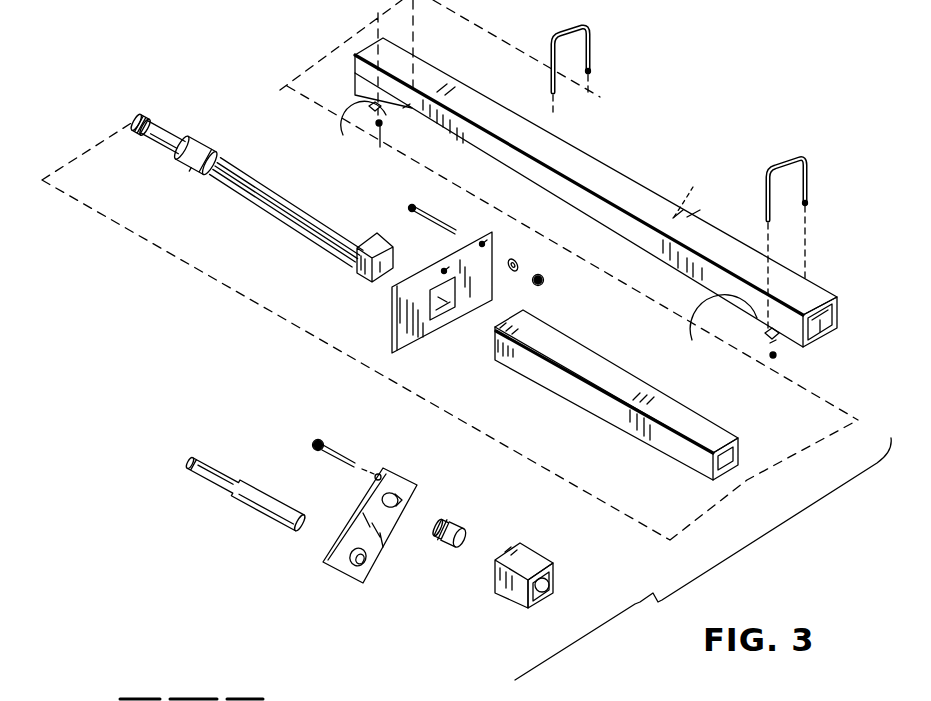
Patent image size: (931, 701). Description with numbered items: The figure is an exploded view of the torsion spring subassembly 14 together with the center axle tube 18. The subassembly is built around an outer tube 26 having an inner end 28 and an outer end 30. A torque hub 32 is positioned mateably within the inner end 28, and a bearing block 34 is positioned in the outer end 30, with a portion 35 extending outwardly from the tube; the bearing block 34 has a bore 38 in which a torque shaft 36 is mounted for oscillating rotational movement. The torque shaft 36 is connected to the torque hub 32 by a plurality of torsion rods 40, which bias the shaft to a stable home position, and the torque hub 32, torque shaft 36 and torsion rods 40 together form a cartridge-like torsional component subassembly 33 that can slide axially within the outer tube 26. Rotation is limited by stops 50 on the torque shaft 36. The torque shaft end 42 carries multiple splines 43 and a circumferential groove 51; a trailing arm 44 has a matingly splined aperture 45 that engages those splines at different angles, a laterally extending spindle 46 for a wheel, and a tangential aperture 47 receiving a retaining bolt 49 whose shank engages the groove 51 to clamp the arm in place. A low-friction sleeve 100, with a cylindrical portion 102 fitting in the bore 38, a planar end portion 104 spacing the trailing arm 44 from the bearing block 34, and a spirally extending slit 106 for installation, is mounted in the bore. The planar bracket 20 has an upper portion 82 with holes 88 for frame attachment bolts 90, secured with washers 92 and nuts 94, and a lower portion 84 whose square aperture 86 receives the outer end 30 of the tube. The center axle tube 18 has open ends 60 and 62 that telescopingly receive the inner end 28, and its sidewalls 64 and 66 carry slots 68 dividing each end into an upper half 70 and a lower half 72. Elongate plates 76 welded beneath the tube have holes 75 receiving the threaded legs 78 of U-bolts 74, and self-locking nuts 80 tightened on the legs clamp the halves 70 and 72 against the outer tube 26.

The torsion spring subassembly 14 is at (226, 374).
The center axle tube 18 is at (673, 196).
The planar bracket 20 is at (415, 309).
The outer tube 26 is at (625, 394).
The inner end 28 is at (732, 437).
The outer end 30 is at (506, 318).
The torque hub 32 is at (355, 273).
The torsional component subassembly 33 is at (227, 163).
The bearing block 34 is at (544, 570).
The portion 35 is at (497, 593).
The torque shaft 36 is at (184, 168).
The bore 38 is at (550, 584).
The torsion rods 40 is at (267, 212).
The torque shaft end 42 is at (172, 134).
The splines 43 is at (143, 117).
The trailing arm 44 is at (372, 519).
The splined aperture 45 is at (409, 504).
The spindle 46 is at (215, 490).
The aperture 47 is at (381, 468).
The retaining bolt 49 is at (338, 454).
The stops 50 is at (198, 138).
The circumferential groove 51 is at (140, 134).
The open end 60 is at (590, 198).
The open end 62 is at (832, 338).
The sidewall 64 is at (617, 236).
The sidewall 66 is at (695, 192).
The slots 68 is at (407, 106).
The upper half 70 is at (353, 60).
The lower half 72 is at (356, 85).
The U-bolts 74 is at (594, 44).
The holes 75 is at (763, 329).
The elongate plates 76 is at (395, 128).
The threaded legs 78 is at (591, 70).
The self-locking nuts 80 is at (380, 146).
The upper portion 82 is at (393, 310).
The lower portion 84 is at (392, 347).
The square aperture 86 is at (462, 314).
The holes 88 is at (480, 243).
The frame attachment bolts 90 is at (408, 208).
The washers 92 is at (517, 259).
The nuts 94 is at (543, 282).
The sleeve 100 is at (438, 564).
The cylindrical portion 102 is at (448, 548).
The planar end portion 104 is at (443, 546).
The spirally extending slit 106 is at (437, 535).